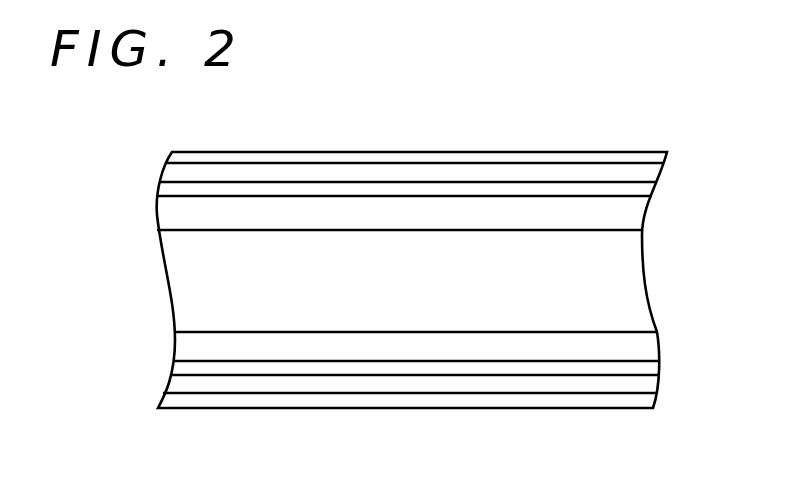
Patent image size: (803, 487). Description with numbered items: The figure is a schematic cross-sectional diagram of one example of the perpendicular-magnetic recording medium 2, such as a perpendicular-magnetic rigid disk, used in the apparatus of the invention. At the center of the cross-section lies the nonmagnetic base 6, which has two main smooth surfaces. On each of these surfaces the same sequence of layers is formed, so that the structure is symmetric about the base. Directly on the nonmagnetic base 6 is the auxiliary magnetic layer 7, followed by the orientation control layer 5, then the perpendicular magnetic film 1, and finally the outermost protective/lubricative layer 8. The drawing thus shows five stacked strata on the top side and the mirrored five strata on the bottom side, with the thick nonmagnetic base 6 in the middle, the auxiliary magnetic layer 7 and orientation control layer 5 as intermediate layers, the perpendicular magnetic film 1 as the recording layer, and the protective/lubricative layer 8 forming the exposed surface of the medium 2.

The perpendicular-magnetic recording medium 2 is at (392, 111).
The protective/lubricative layer 8 is at (667, 153).
The perpendicular magnetic film 1 is at (646, 175).
The orientation control layer 5 is at (642, 190).
The auxiliary magnetic layer 7 is at (630, 212).
The nonmagnetic base 6 is at (626, 277).